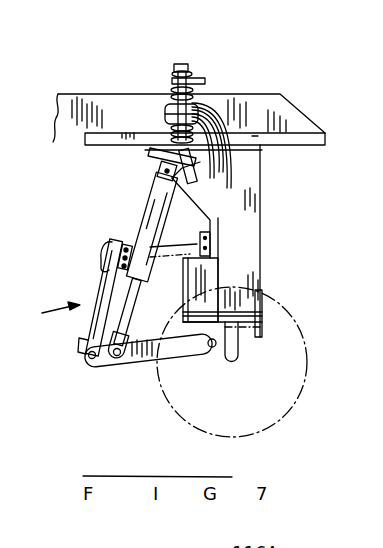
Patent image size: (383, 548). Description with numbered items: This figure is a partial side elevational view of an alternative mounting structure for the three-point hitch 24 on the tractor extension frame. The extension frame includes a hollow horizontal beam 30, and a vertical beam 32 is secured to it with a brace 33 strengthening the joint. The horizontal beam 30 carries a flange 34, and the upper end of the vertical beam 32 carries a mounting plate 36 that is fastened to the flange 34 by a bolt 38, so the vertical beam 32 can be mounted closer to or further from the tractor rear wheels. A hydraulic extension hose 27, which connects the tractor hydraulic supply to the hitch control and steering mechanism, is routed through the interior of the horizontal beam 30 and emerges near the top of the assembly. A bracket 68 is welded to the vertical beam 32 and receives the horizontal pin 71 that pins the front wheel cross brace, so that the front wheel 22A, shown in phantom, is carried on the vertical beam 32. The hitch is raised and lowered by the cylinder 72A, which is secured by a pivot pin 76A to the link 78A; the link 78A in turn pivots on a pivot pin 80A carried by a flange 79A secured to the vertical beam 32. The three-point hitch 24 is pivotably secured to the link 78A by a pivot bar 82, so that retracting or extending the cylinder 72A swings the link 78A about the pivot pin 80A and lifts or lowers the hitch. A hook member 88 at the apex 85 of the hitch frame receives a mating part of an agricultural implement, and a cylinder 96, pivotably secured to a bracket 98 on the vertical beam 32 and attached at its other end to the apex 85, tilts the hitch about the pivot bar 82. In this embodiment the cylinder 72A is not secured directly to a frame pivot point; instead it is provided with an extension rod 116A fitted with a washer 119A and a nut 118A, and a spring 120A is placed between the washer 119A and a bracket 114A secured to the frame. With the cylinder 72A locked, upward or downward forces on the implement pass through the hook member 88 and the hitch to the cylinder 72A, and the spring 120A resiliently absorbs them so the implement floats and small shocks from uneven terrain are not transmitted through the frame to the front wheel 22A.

The front wheel 22A is at (305, 352).
The three-point hitch 24 is at (47, 315).
The extension hose 27 is at (205, 113).
The horizontal beam 30 is at (283, 100).
The vertical beam 32 is at (246, 253).
The brace 33 is at (243, 201).
The flange 34 is at (288, 147).
The mounting plate 36 is at (257, 173).
The bolt 38 is at (252, 136).
The bracket 68 is at (262, 302).
The horizontal pin 71 is at (263, 317).
The cylinder 72A is at (158, 186).
The pivot pin 76A is at (110, 366).
The link 78A is at (142, 363).
The flange 79A is at (232, 278).
The pivot pin 80A is at (212, 348).
The pivot bar 82 is at (82, 362).
The apex 85 is at (120, 240).
The hook member 88 is at (104, 246).
The cylinder 96 is at (177, 244).
The bracket 98 is at (210, 232).
The bracket 114A is at (150, 152).
The extension rod 116A is at (184, 64).
The nut 118A is at (182, 70).
The washer 119A is at (180, 78).
The spring 120A is at (178, 108).